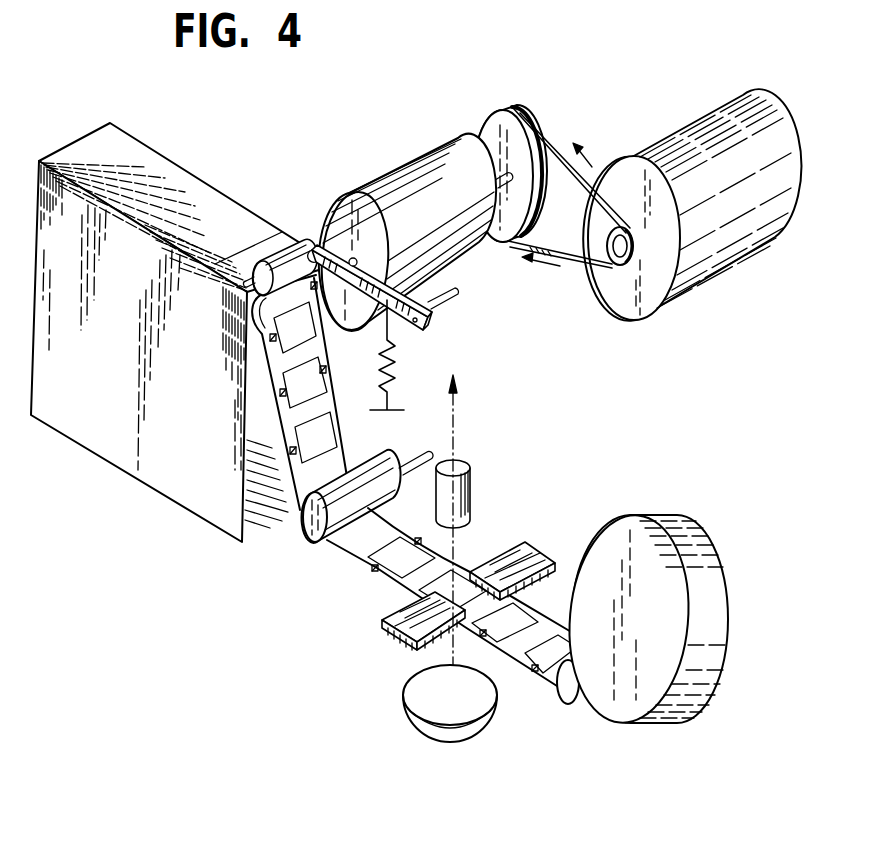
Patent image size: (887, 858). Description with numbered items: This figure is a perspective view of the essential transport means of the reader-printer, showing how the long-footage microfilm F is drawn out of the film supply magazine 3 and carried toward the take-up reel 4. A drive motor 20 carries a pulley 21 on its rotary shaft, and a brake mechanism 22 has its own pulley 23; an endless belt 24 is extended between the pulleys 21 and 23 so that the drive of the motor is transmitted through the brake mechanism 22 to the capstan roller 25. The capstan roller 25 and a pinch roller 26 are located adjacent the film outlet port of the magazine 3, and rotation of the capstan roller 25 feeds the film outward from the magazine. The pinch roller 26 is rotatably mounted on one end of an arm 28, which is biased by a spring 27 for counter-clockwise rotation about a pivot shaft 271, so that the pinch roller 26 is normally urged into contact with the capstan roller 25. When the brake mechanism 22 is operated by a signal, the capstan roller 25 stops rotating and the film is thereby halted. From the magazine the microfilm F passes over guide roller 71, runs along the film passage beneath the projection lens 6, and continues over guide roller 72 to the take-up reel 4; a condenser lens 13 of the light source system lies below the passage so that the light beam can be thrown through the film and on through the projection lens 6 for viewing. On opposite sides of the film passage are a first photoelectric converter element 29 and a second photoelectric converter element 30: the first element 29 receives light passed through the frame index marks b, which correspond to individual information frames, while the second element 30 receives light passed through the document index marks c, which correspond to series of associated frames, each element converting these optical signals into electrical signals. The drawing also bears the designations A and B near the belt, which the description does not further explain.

The film supply magazine 3 is at (185, 178).
The take-up reel 4 is at (697, 552).
The projection lens 6 is at (463, 492).
The condenser lens 13 is at (412, 700).
The drive motor 20 is at (748, 242).
The pulley 21 is at (622, 250).
The brake mechanism 22 is at (428, 160).
The pulley 23 is at (505, 115).
The endless belt 24 is at (582, 262).
The capstan roller 25 is at (250, 313).
The pinch roller 26 is at (292, 248).
The spring 27 is at (378, 362).
The arm 28 is at (408, 326).
The pivot shaft 271 is at (461, 295).
The first photoelectric converter element 29 is at (412, 634).
The second photoelectric converter element 30 is at (533, 560).
The guide roller 71 is at (306, 532).
The guide roller 72 is at (569, 704).
The direction arrow A is at (541, 274).
The direction arrow B is at (590, 152).
The microfilm F is at (395, 526).
The frame index marks b is at (374, 568).
The document index marks c is at (418, 540).